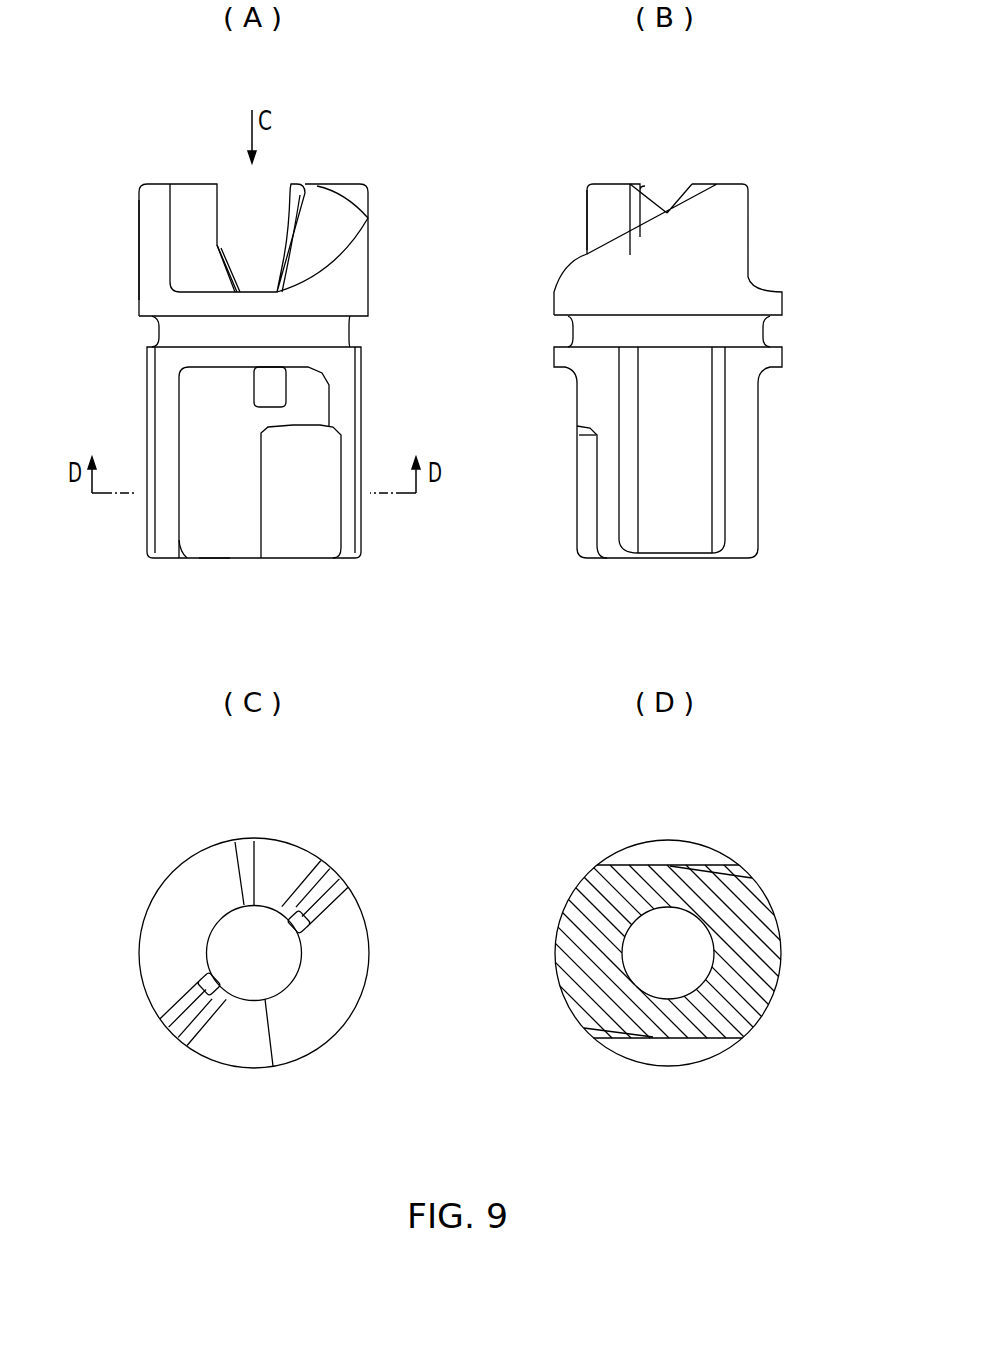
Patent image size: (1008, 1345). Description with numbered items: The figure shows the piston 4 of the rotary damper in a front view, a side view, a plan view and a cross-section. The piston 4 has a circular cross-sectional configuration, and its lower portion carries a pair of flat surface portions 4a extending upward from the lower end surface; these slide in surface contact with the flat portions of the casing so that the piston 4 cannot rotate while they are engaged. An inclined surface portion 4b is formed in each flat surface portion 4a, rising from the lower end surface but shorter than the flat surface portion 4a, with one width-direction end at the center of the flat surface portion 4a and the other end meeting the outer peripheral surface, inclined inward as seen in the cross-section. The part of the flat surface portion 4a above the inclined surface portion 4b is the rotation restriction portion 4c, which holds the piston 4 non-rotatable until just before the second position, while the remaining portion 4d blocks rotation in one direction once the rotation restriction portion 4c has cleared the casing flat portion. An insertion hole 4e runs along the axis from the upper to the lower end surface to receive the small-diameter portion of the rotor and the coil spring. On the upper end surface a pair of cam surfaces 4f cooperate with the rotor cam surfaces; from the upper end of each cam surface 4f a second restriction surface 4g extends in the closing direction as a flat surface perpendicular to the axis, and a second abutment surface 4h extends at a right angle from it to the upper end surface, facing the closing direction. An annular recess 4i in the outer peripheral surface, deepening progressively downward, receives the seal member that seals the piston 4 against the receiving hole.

The piston 4 is at (130, 263).
The flat surface portion 4a is at (213, 498).
The inclined surface portion 4b is at (308, 532).
The rotation restriction portion 4c is at (208, 408).
The remaining portion 4d is at (217, 535).
The insertion hole 4e is at (222, 935).
The cam surface 4f is at (335, 218).
The second restriction surface 4g is at (182, 185).
The second abutment surface 4h is at (157, 213).
The annular recess 4i is at (158, 330).